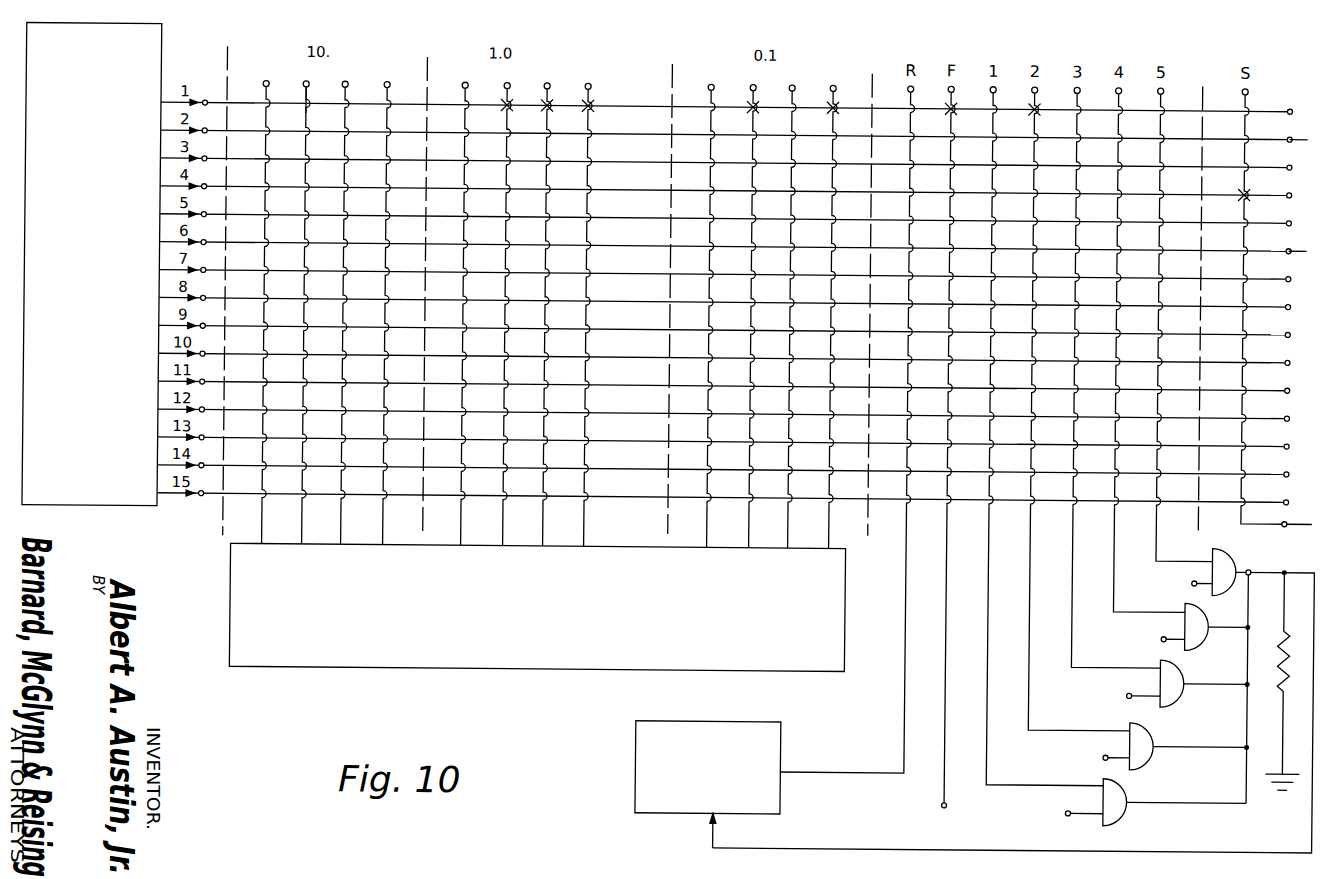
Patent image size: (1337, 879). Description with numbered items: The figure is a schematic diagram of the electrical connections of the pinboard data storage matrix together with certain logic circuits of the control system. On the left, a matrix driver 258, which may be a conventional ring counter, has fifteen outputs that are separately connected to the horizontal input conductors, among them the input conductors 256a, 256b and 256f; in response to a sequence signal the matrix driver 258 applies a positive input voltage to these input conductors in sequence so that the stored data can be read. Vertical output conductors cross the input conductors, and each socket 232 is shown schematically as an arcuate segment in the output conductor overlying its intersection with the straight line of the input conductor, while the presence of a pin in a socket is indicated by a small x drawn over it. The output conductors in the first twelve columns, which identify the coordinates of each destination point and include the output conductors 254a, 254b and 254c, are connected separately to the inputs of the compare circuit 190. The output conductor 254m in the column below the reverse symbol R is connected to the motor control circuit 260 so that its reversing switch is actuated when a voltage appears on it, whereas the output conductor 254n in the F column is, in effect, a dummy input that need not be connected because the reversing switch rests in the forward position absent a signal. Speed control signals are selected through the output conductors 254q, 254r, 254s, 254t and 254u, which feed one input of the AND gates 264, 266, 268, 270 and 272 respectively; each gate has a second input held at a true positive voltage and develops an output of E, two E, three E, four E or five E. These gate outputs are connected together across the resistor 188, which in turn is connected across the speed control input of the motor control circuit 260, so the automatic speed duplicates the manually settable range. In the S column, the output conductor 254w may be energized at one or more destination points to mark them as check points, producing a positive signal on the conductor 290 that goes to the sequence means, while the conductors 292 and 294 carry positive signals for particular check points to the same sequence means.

The matrix driver 258 is at (100, 492).
The input conductor 256a is at (218, 100).
The input conductor 256b is at (206, 130).
The input conductor 256f is at (206, 242).
The socket 232 is at (300, 100).
The conductor 292 is at (1306, 130).
The conductor 294 is at (1306, 242).
The conductor 290 is at (1310, 515).
The output conductor 254a is at (268, 537).
The output conductor 254b is at (307, 537).
The output conductor 254c is at (347, 530).
The compare circuit 190 is at (396, 652).
The output conductor 254m is at (910, 665).
The output conductor 254n is at (951, 751).
The output conductor 254q is at (993, 770).
The output conductor 254r is at (1035, 696).
The output conductor 254s is at (1077, 635).
The output conductor 254t is at (1118, 592).
The output conductor 254u is at (1160, 542).
The output conductor 254w is at (1245, 507).
The AND gate 272 is at (1232, 541).
The AND gate 270 is at (1198, 633).
The AND gate 268 is at (1183, 692).
The AND gate 266 is at (1159, 756).
The AND gate 264 is at (1132, 812).
The resistor 188 is at (1284, 682).
The motor control circuit 260 is at (682, 796).